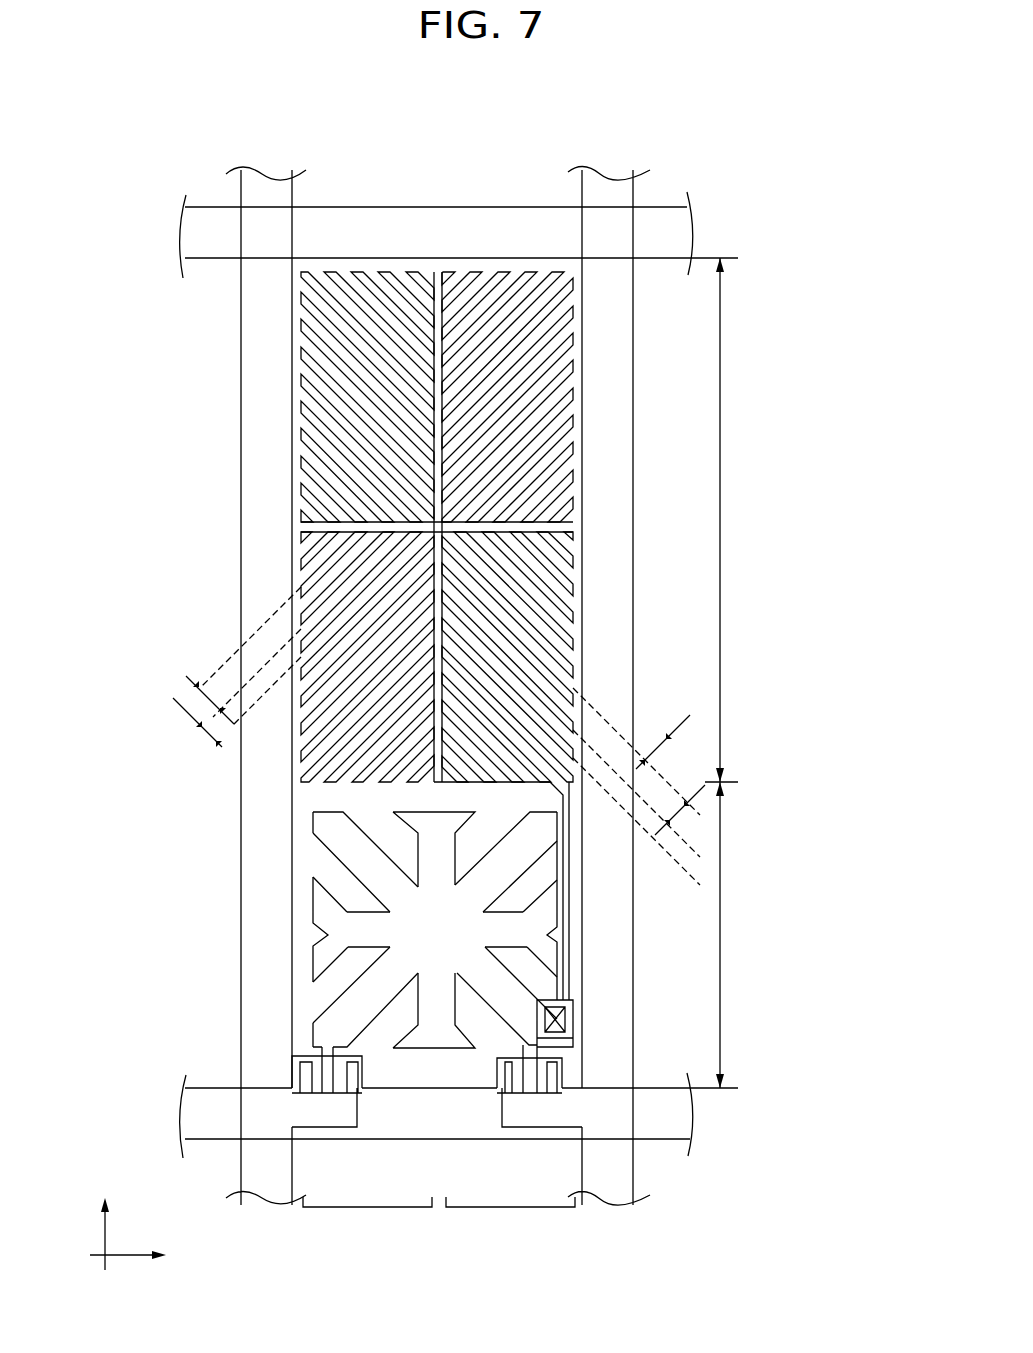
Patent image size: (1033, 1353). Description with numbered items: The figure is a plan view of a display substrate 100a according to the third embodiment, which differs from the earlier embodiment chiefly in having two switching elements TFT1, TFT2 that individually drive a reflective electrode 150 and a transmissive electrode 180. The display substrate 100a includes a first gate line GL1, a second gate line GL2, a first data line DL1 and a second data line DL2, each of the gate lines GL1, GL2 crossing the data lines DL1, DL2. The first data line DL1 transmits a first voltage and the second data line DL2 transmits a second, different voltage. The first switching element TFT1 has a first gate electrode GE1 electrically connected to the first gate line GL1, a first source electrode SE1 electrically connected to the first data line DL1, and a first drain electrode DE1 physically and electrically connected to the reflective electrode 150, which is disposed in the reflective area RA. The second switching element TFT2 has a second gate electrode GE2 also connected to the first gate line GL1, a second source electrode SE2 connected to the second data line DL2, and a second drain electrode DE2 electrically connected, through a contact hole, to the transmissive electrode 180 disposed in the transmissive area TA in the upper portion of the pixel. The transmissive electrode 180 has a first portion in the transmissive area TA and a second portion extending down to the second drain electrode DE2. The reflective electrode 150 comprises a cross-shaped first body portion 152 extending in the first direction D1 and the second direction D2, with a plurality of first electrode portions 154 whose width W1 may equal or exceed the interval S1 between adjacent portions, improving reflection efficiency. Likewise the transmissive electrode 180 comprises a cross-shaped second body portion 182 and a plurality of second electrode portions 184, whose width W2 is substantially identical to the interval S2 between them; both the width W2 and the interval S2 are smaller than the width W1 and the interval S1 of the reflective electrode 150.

The display substrate 100a is at (400, 182).
The first gate line GL1 is at (690, 1115).
The second gate line GL2 is at (690, 237).
The first data line DL1 is at (241, 975).
The second data line DL2 is at (608, 992).
The transmissive electrode 180 is at (165, 445).
The second body portion 182 is at (325, 527).
The second electrode portions 184 is at (310, 458).
The reflective electrode 150 is at (165, 845).
The first body portion 152 is at (316, 935).
The first electrode portions 154 is at (362, 862).
The first switching element TFT1 is at (362, 1144).
The second switching element TFT2 is at (513, 1120).
The first gate electrode GE1 is at (352, 1093).
The first source electrode SE1 is at (360, 1093).
The first drain electrode DE1 is at (323, 1093).
The second gate electrode GE2 is at (537, 1097).
The second source electrode SE2 is at (528, 1098).
The second drain electrode DE2 is at (543, 1097).
The transmissive area TA is at (743, 520).
The reflective area RA is at (750, 935).
The interval between the first electrode portions S1 is at (651, 745).
The interval between the second electrode portions S2 is at (212, 692).
The width of the first electrode portions W1 is at (676, 815).
The width of the second electrode portions W2 is at (199, 729).
The first direction D1 is at (149, 1257).
The second direction D2 is at (104, 1217).